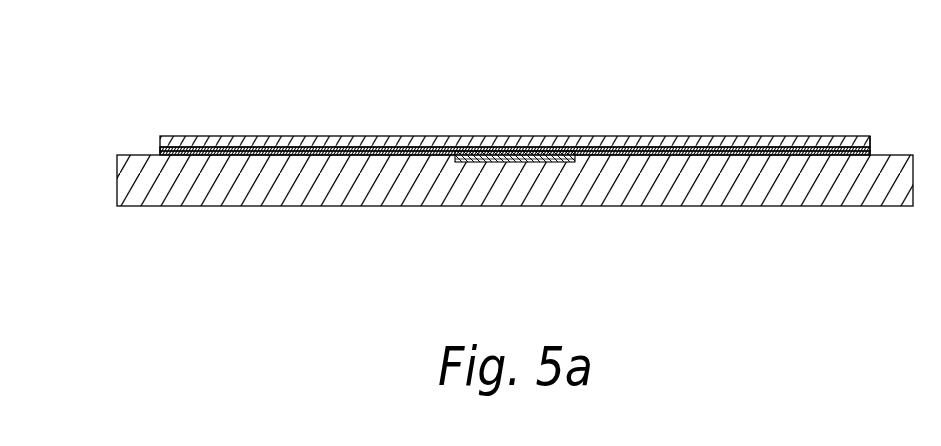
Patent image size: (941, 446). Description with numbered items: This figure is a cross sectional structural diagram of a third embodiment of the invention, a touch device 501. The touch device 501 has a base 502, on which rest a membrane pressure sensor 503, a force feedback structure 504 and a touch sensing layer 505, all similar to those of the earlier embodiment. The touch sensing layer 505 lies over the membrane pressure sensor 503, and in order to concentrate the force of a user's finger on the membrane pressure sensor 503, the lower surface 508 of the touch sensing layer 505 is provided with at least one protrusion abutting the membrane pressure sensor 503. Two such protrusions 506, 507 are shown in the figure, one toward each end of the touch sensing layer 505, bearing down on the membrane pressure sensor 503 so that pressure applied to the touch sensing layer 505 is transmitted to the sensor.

The touch device 501 is at (825, 86).
The base 502 is at (198, 207).
The membrane pressure sensor 503 is at (160, 152).
The force feedback structure 504 is at (528, 150).
The touch sensing layer 505 is at (229, 136).
The protrusion 506 is at (175, 148).
The protrusion 507 is at (856, 137).
The lower surface 508 is at (297, 147).